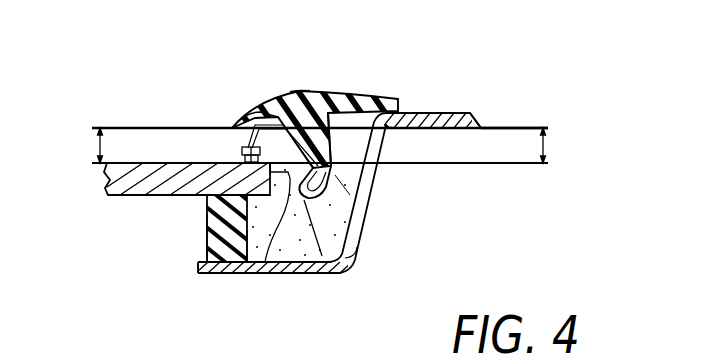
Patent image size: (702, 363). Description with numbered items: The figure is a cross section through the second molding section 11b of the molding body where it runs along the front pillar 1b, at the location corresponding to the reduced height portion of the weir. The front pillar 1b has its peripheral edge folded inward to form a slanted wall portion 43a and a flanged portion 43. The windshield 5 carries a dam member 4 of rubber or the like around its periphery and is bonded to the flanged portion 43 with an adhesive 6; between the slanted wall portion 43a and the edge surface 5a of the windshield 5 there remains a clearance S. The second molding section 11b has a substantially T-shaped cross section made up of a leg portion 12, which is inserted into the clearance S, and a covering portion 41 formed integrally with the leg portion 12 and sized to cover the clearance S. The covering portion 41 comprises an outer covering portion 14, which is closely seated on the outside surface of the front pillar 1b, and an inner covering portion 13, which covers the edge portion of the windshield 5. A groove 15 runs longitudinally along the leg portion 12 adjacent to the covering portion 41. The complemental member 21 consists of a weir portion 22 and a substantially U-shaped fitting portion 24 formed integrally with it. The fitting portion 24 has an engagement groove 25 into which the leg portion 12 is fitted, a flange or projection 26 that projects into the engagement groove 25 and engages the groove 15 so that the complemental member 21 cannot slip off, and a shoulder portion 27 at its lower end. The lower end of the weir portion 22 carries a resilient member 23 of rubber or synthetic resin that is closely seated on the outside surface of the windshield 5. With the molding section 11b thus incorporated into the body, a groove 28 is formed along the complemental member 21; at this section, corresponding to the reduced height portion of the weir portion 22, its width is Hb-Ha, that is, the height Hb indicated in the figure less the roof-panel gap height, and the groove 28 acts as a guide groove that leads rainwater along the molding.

The front pillar 1b is at (469, 117).
The dam member 4 is at (207, 250).
The windshield 5 is at (119, 196).
The edge surface of the windshield 5a is at (209, 275).
The adhesive 6 is at (271, 258).
The second molding section 11b is at (312, 90).
The leg portion 12 is at (266, 250).
The inner covering portion 13 is at (272, 96).
The outer covering portion 14 is at (362, 108).
The groove 15 is at (412, 111).
The complemental member 21 is at (290, 143).
The weir portion 22 is at (233, 127).
The resilient member 23 is at (243, 153).
The fitting portion 24 is at (338, 178).
The engagement groove 25 is at (323, 176).
The flange or projection 26 is at (323, 139).
The shoulder portion 27 is at (323, 257).
The groove 28 is at (234, 143).
The covering portion 41 is at (300, 90).
The flanged portion 43 is at (297, 256).
The slanted wall portion 43a is at (358, 244).
The clearance S is at (345, 171).
The height Hb is at (543, 139).
The groove width Hb-Ha is at (98, 146).